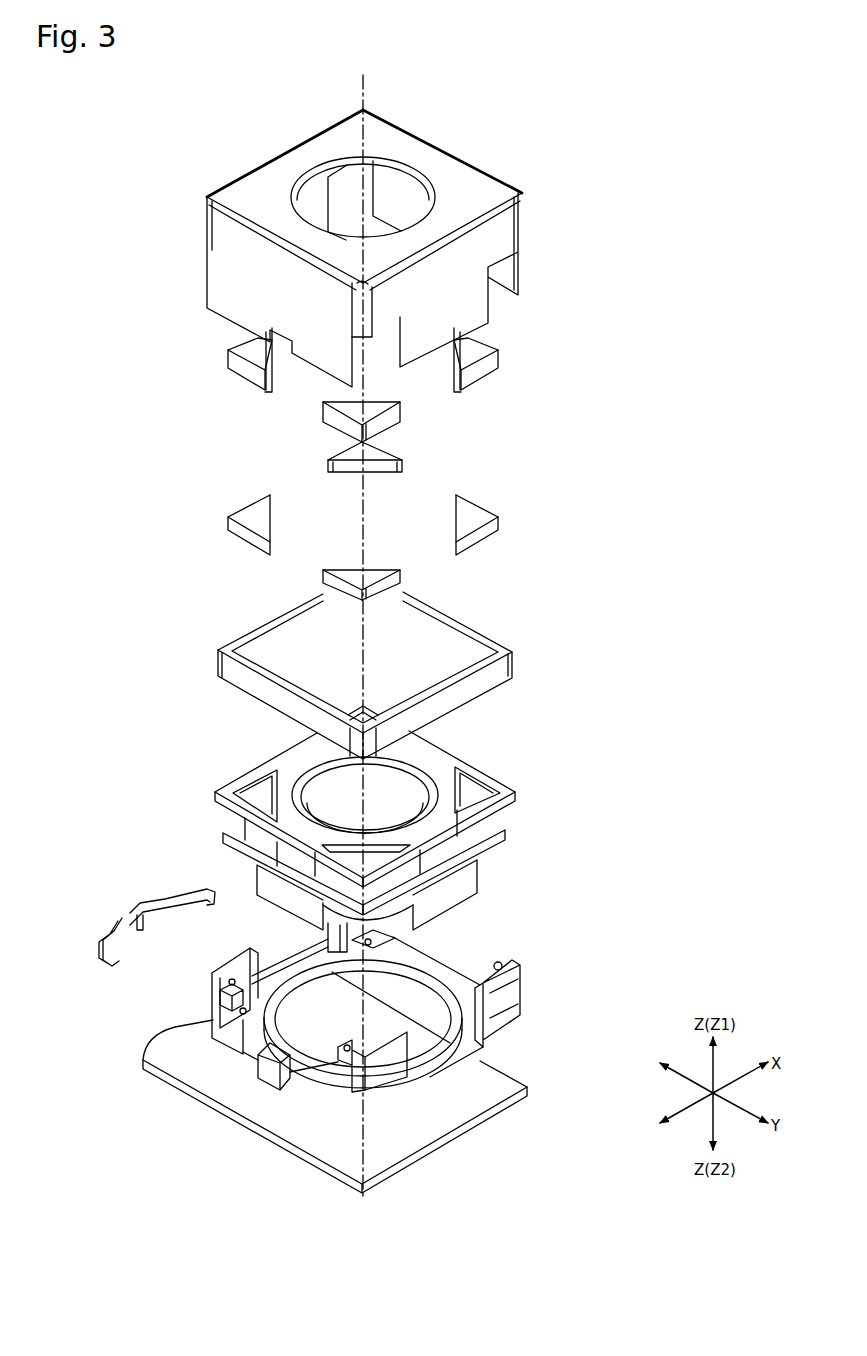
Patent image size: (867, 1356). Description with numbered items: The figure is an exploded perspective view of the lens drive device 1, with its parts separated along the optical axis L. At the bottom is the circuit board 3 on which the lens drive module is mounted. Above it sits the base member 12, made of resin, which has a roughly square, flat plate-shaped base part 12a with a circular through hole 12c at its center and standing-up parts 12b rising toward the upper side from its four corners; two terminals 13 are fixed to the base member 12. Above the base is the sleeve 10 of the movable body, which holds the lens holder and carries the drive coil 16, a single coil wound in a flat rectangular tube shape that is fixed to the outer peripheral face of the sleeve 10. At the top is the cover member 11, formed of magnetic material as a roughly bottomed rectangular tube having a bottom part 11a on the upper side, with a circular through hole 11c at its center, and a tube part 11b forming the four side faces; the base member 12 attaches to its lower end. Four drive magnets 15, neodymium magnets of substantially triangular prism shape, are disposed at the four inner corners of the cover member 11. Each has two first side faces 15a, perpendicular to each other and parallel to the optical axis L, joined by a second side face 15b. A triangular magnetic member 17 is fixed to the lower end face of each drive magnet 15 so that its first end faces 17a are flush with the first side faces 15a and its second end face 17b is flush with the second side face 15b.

The lens drive device 1 is at (680, 166).
The optical axis L is at (366, 92).
The circuit board 3 is at (503, 1108).
The sleeve 10 is at (478, 878).
The cover member 11 is at (390, 248).
The bottom part 11a is at (484, 204).
The tube part 11b is at (288, 293).
The circular through hole 11c is at (400, 160).
The base member 12 is at (367, 1021).
The base part 12a is at (363, 1024).
The standing-up parts 12b is at (324, 942).
The circular through hole 12c is at (413, 970).
The terminals 13 is at (130, 916).
The drive magnets 15 is at (365, 385).
The first side faces 15a is at (249, 375).
The second side face 15b is at (270, 383).
The drive coil 16 is at (515, 667).
The magnetic member 17 is at (378, 540).
The first end faces 17a is at (243, 537).
The second end face 17b is at (347, 468).